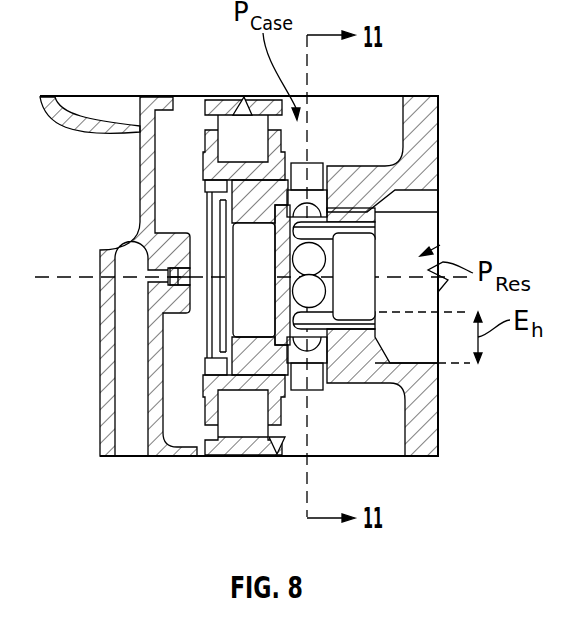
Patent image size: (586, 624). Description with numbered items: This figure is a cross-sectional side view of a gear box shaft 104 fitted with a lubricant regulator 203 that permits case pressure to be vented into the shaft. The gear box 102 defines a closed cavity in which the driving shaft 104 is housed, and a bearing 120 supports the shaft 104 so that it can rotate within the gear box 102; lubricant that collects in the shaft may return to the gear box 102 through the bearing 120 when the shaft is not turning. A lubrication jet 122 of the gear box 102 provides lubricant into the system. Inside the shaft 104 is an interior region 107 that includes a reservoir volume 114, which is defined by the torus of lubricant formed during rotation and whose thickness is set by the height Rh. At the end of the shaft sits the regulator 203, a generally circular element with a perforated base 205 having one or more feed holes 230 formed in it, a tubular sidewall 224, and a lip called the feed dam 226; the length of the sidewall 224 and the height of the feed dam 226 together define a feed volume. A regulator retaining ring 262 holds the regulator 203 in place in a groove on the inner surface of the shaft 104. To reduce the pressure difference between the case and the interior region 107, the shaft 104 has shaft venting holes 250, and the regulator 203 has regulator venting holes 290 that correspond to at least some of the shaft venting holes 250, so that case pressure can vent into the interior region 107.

The gear box 102 is at (105, 257).
The gear box shaft 104 is at (355, 166).
The interior region 107 is at (428, 207).
The reservoir volume 114 is at (432, 349).
The bearing 120 is at (243, 100).
The lubrication jet 122 is at (145, 282).
The regulator 203 is at (220, 454).
The perforated base 205 is at (272, 225).
The tubular sidewall 224 is at (262, 195).
The feed dam 226 is at (262, 296).
The feed holes 230 is at (272, 297).
The shaft venting holes 250 is at (312, 166).
The regulator retaining ring 262 is at (283, 283).
The regulator venting holes 290 is at (338, 273).